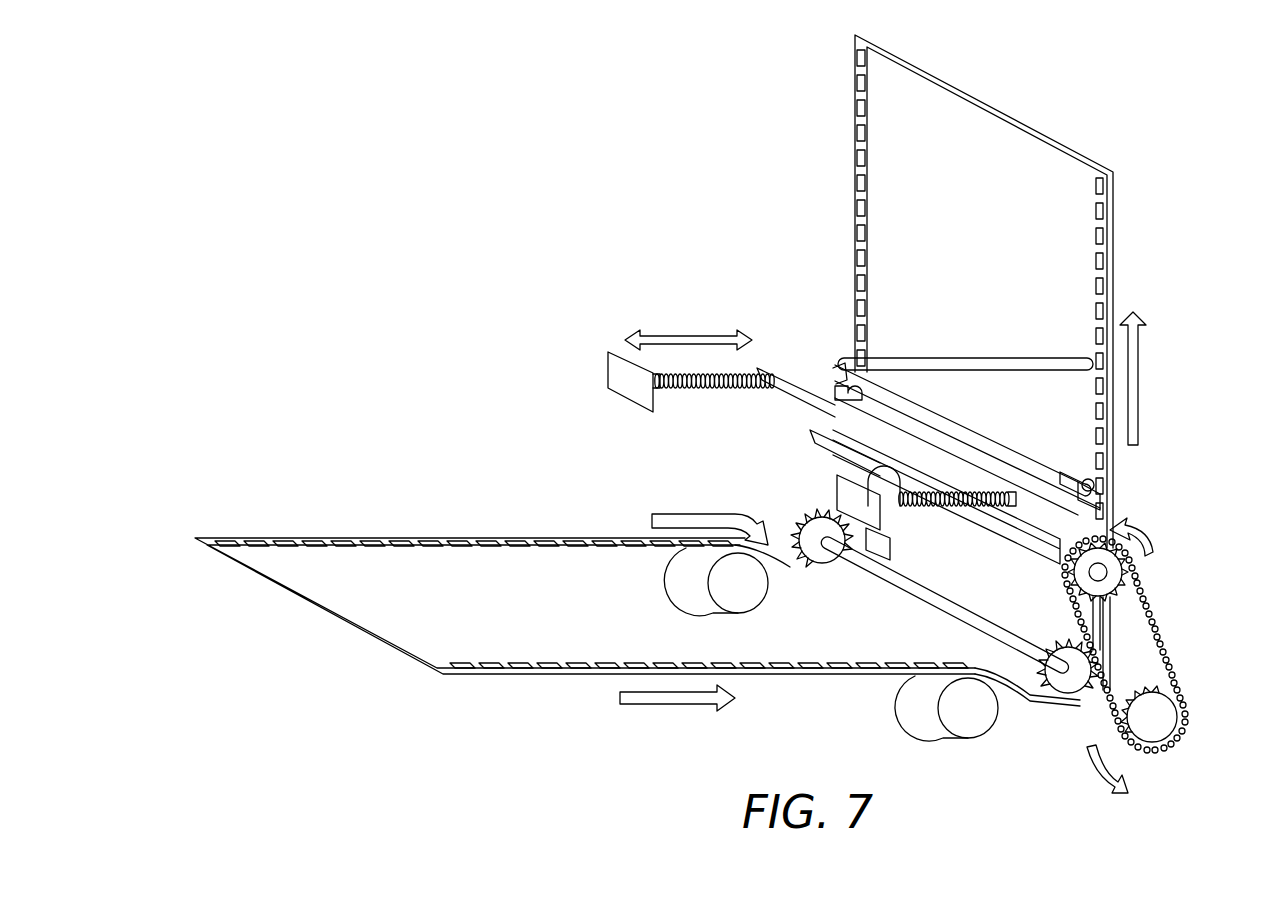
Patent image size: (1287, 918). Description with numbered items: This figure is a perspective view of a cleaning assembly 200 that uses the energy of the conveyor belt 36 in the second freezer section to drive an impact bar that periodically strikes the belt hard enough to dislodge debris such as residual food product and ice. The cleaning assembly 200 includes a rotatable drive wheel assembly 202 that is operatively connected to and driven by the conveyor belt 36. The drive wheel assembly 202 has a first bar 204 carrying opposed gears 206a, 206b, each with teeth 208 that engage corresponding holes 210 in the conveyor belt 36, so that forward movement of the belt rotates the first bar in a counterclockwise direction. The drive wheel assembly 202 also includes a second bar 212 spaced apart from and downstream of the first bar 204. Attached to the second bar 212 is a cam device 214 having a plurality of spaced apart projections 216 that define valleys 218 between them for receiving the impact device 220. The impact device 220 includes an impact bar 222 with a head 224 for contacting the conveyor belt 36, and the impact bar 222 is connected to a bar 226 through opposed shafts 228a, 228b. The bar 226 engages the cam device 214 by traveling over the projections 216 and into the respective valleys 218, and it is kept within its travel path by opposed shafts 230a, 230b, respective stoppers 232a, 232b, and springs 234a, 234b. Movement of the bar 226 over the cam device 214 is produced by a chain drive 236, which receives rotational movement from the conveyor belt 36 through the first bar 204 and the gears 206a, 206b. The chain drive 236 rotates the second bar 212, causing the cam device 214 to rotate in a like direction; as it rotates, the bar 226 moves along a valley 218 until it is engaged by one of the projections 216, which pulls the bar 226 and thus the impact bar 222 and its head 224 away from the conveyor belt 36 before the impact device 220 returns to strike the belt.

The cleaning assembly 200 is at (1160, 166).
The conveyor belt 36 is at (976, 249).
The drive wheel assembly 202 is at (1122, 568).
The first bar 204 is at (916, 598).
The gear 206a is at (1084, 700).
The gear 206b is at (795, 527).
The teeth 208 is at (1012, 652).
The holes 210 is at (500, 542).
The second bar 212 is at (1050, 552).
The cam device 214 is at (838, 471).
The projections 216 is at (935, 455).
The valleys 218 is at (828, 438).
The impact device 220 is at (703, 322).
The impact bar 222 is at (1094, 488).
The head 224 is at (930, 414).
The bar 226 is at (835, 402).
The shaft 228a is at (1082, 478).
The shaft 228b is at (865, 392).
The shaft 230a is at (900, 508).
The shaft 230b is at (683, 392).
The stopper 232a is at (872, 555).
The stopper 232b is at (613, 378).
The spring 234a is at (975, 508).
The spring 234b is at (737, 390).
The chain drive 236 is at (1152, 648).